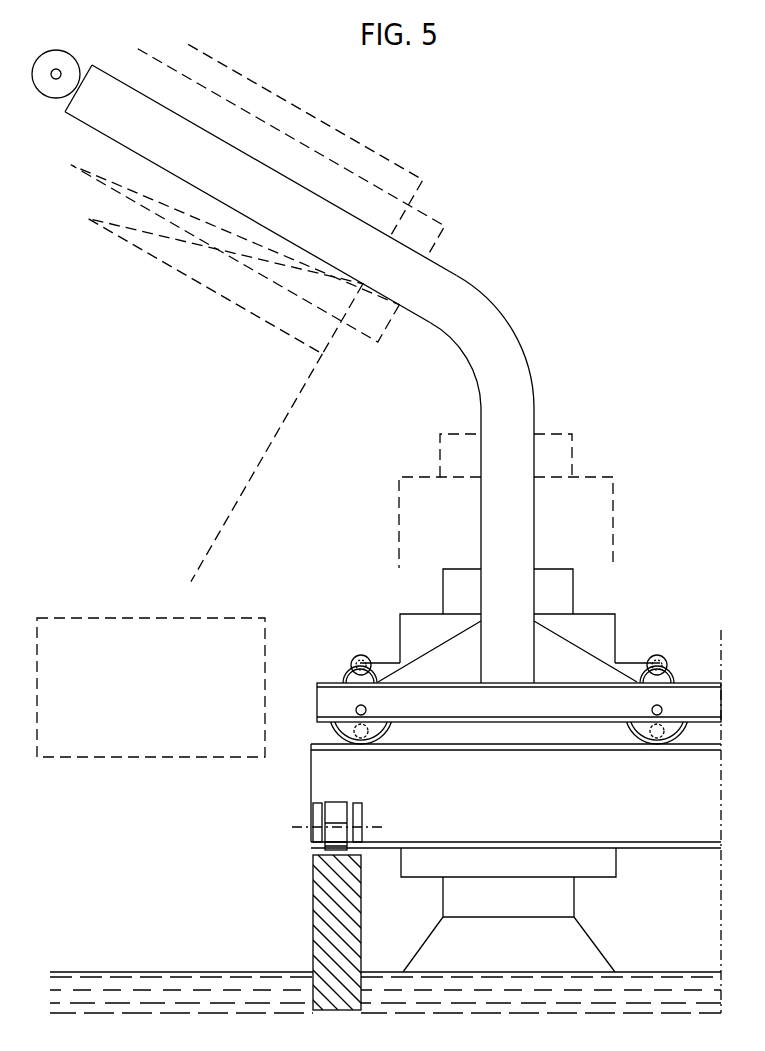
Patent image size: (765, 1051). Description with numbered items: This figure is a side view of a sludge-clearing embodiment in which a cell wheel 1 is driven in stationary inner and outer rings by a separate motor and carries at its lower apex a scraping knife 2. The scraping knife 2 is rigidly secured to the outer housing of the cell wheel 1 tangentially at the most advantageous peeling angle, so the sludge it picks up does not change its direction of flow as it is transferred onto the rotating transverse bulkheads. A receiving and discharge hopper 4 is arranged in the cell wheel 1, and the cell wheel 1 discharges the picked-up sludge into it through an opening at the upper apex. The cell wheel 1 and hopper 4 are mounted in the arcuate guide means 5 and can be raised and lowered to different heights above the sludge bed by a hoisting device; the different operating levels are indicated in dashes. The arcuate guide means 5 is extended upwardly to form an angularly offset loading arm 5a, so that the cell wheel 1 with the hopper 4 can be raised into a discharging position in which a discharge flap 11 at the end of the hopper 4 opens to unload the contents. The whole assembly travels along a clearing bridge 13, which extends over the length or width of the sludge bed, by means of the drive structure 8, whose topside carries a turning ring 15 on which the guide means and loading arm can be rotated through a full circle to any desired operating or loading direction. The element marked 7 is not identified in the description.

The cell wheel 1 is at (345, 138).
The scraping knife 2 is at (587, 955).
The receiving and discharge hopper 4 is at (420, 238).
The arcuate guide means 5 is at (513, 413).
The loading arm 5a is at (99, 80).
The control unit 7 is at (156, 694).
The drive structure 8 is at (673, 708).
The discharge flap 11 is at (235, 510).
The clearing bridge 13 is at (310, 788).
The turning ring 15 is at (386, 670).